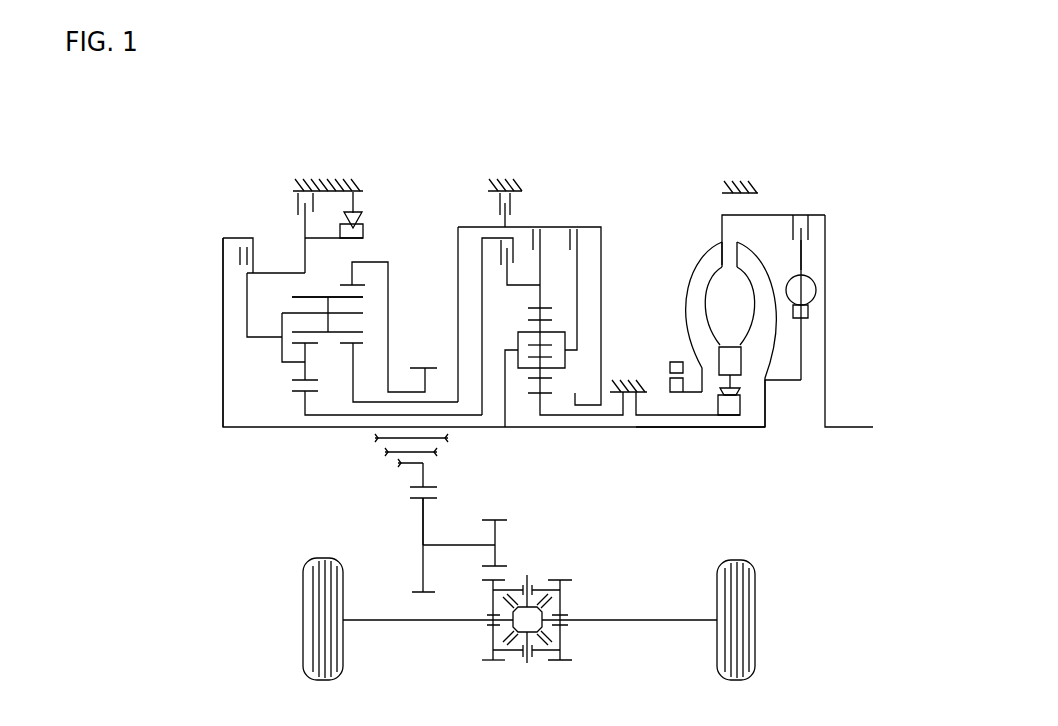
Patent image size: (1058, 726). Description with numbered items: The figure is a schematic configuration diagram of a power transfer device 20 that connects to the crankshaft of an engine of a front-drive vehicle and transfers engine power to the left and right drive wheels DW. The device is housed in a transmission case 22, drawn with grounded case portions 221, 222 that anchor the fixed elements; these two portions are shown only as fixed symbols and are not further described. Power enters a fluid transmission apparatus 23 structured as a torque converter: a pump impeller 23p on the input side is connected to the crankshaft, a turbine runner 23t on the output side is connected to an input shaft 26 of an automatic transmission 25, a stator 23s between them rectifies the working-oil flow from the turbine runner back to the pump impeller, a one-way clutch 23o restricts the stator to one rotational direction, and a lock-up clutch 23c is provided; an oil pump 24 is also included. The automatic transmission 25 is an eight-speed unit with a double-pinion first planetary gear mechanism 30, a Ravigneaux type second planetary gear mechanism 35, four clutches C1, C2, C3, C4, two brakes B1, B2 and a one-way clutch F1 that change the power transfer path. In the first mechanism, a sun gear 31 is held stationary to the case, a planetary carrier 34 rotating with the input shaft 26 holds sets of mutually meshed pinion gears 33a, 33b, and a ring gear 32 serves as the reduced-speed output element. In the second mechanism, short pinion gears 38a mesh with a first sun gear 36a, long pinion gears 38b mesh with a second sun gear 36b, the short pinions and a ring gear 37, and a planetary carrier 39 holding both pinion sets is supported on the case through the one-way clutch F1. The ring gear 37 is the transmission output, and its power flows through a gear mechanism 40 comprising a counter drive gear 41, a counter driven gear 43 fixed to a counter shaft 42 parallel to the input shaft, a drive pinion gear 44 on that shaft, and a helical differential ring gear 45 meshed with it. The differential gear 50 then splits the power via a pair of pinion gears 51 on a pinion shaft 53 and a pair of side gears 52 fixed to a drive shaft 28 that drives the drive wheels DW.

The power transfer device 20 is at (583, 157).
The transmission case 22 is at (313, 178).
The case portion 221 is at (737, 179).
The case portion 222 is at (503, 178).
The fluid transmission apparatus 23 is at (712, 238).
The pump impeller 23p is at (698, 268).
The stator 23s is at (733, 347).
The turbine runner 23t is at (757, 267).
The lock-up clutch 23c is at (812, 255).
The one-way clutch 23o is at (747, 405).
The oil pump 24 is at (665, 382).
The automatic transmission 25 is at (432, 200).
The input shaft 26 is at (738, 427).
The drive shaft 28 is at (397, 622).
The first planetary gear mechanism 30 is at (508, 335).
The sun gear 31 is at (533, 395).
The ring gear 32 is at (528, 309).
The pinion gear 33a is at (550, 357).
The pinion gear 33b is at (550, 320).
The planetary carrier 34 is at (570, 362).
The second planetary gear mechanism 35 is at (277, 388).
The first sun gear 36a is at (297, 392).
The second sun gear 36b is at (345, 345).
The ring gear 37 is at (368, 275).
The short pinion gears 38a is at (292, 368).
The long pinion gears 38b is at (293, 297).
The planetary carrier 39 is at (282, 318).
The gear mechanism 40 is at (410, 510).
The counter drive gear 41 is at (410, 487).
The counter shaft 42 is at (448, 545).
The counter driven gear 43 is at (423, 543).
The drive pinion gear 44 is at (500, 521).
The differential ring gear 45 is at (492, 660).
The differential gear 50 is at (582, 602).
The pinion gears 51 is at (540, 580).
The side gears 52 is at (510, 612).
The pinion shaft 53 is at (527, 662).
The brake B1 is at (515, 208).
The brake B2 is at (298, 205).
The clutch C1 is at (500, 255).
The clutch C2 is at (238, 250).
The clutch C3 is at (550, 240).
The clutch C4 is at (583, 240).
The one-way clutch F1 is at (363, 230).
The drive wheels DW is at (303, 620).